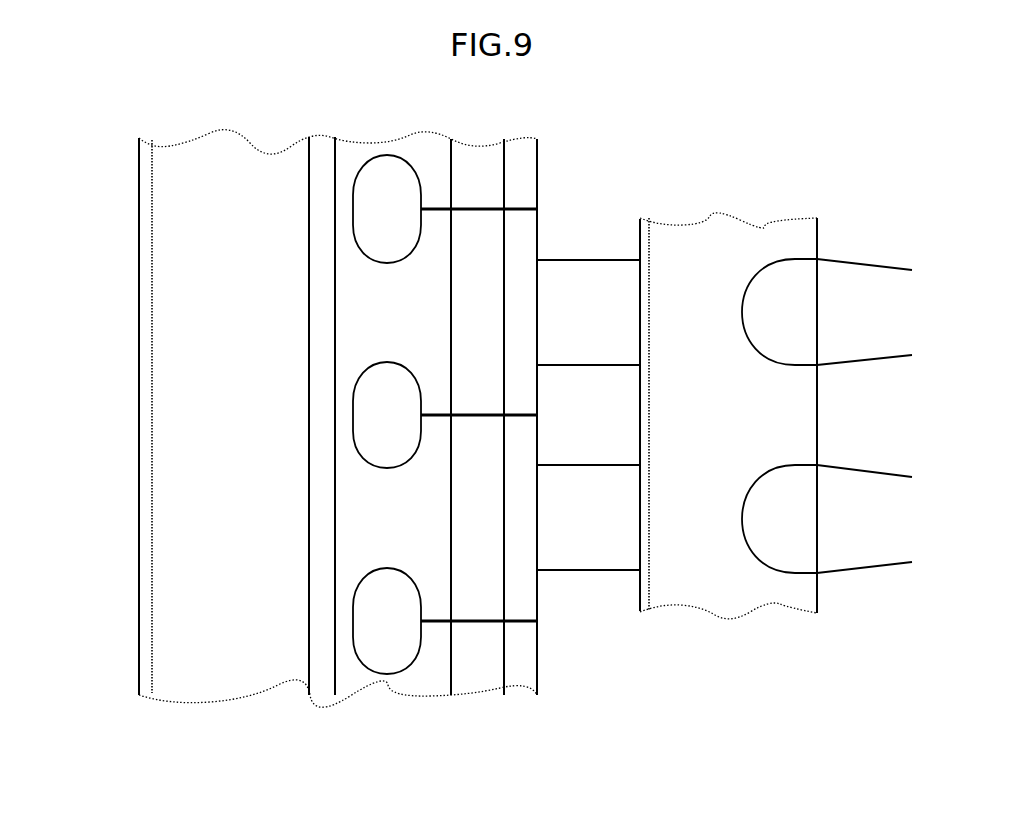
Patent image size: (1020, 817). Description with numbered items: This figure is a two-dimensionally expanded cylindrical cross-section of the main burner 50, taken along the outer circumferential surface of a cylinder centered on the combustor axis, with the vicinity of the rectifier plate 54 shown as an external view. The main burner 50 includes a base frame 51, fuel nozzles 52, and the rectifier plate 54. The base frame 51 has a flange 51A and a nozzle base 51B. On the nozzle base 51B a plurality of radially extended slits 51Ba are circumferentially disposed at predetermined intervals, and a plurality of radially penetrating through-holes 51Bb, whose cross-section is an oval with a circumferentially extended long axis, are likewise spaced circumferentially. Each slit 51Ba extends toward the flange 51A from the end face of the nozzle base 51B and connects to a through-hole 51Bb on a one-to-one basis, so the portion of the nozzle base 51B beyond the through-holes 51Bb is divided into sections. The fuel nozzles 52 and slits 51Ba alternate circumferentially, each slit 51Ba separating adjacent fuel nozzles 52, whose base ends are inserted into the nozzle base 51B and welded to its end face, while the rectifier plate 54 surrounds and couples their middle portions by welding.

The main burner 50 is at (86, 395).
The base frame 51 is at (114, 205).
The flange 51A is at (133, 245).
The nozzle base 51B is at (549, 178).
The slits 51Ba is at (480, 205).
The through-holes 51Bb is at (353, 190).
The fuel nozzle 52 is at (869, 254).
The rectifier plate 54 is at (818, 422).